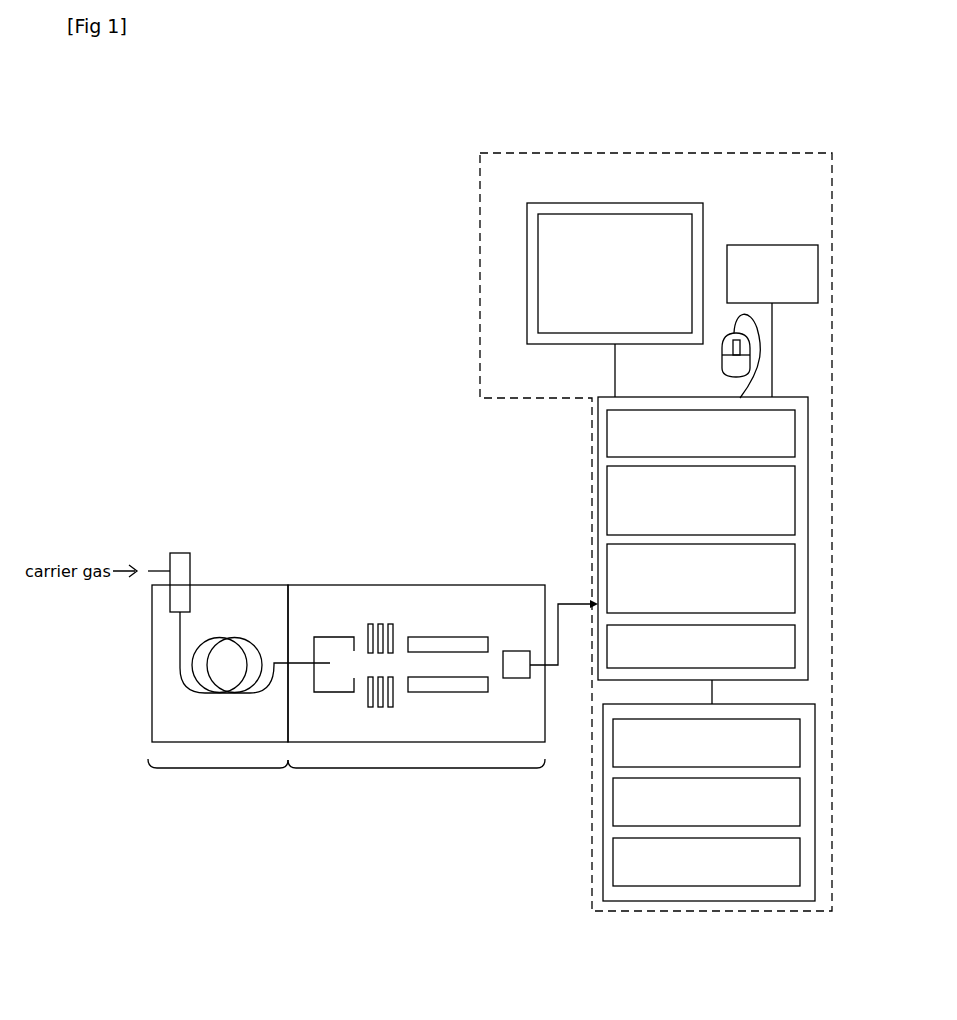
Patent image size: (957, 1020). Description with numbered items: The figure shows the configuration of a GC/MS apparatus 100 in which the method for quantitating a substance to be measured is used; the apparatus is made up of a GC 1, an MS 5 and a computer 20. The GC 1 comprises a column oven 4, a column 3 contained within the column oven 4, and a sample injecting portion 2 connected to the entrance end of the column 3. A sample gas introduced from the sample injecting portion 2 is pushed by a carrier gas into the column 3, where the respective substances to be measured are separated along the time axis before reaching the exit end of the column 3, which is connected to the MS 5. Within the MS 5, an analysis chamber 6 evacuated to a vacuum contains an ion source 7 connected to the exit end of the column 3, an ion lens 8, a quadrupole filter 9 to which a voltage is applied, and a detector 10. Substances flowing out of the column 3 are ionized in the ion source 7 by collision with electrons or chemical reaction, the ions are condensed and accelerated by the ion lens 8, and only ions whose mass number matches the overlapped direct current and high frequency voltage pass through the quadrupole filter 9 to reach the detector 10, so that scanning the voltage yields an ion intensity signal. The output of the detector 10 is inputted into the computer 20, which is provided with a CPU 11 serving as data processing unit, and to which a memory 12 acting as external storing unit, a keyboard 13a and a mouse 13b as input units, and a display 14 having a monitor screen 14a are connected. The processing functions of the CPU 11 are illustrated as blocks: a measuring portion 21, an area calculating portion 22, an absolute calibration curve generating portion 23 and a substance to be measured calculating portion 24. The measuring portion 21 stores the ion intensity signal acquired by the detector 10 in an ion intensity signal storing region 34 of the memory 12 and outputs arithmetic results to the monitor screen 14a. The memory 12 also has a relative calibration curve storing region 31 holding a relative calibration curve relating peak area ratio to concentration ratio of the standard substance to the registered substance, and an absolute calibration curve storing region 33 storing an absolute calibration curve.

The mass spectrometry system 100 is at (362, 139).
The GC 1 is at (218, 776).
The sample injecting portion 2 is at (182, 565).
The column 3 is at (178, 650).
The column oven 4 is at (172, 713).
The MS 5 is at (416, 779).
The analysis chamber 6 is at (310, 605).
The ion source 7 is at (336, 637).
The ion lens 8 is at (397, 622).
The quadrupole filter 9 is at (453, 642).
The detector 10 is at (517, 660).
The CPU 11 is at (618, 515).
The memory 12 is at (701, 802).
The keyboard 13a is at (772, 273).
The mouse 13b is at (728, 363).
The display 14 is at (550, 255).
The monitor screen 14a is at (605, 228).
The computer 20 is at (712, 912).
The measuring portion 21 is at (795, 432).
The area calculating portion 22 is at (795, 648).
The absolute calibration curve generating portion 23 is at (795, 500).
The substance to be measured calculating portion 24 is at (795, 578).
The relative calibration curve storing region 31 is at (800, 740).
The absolute calibration curve storing region 33 is at (800, 796).
The ion intensity signal storing region 34 is at (800, 860).